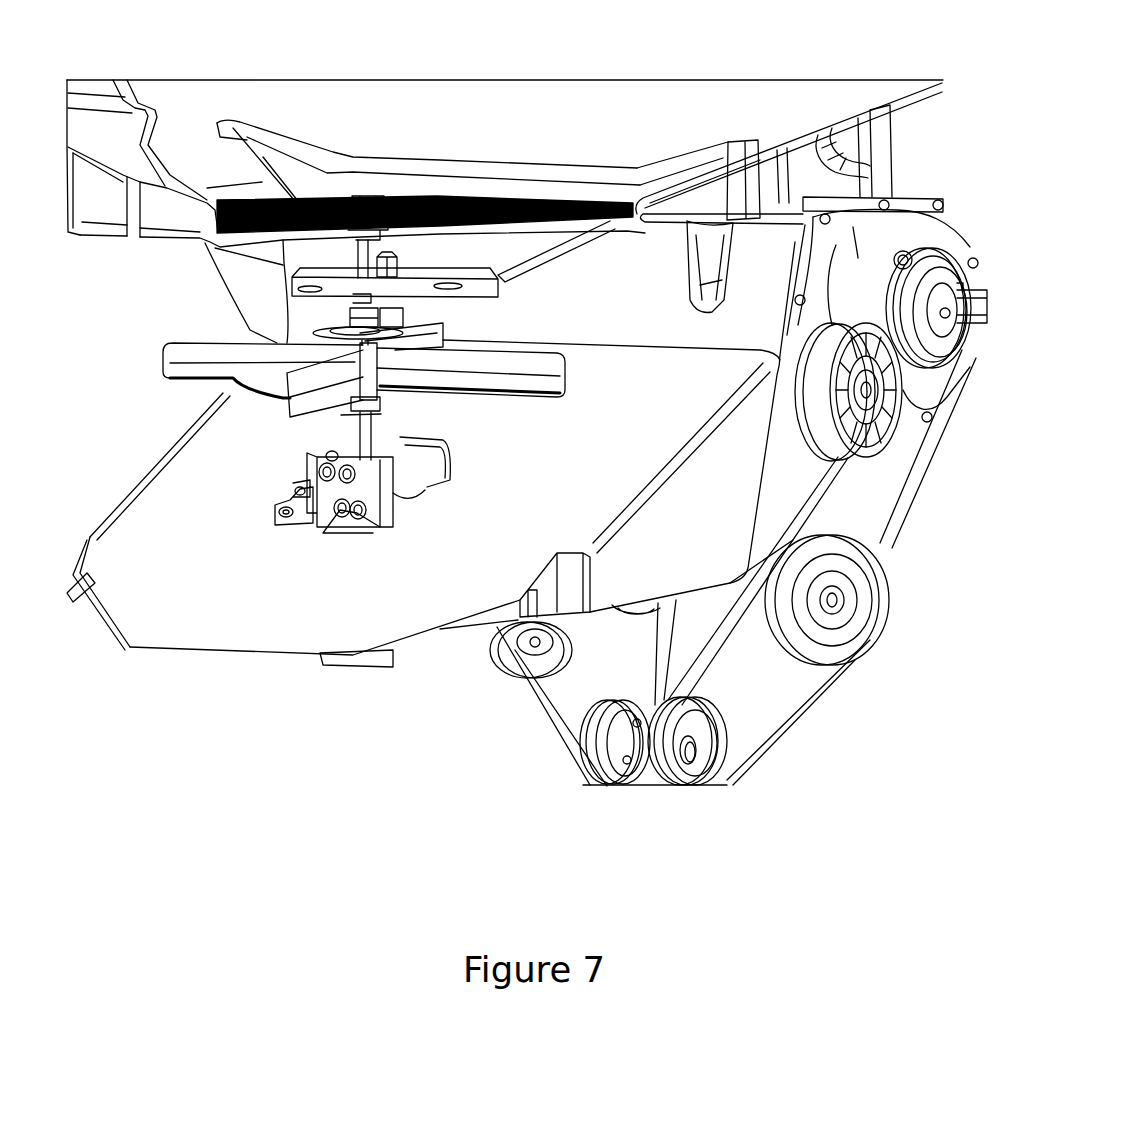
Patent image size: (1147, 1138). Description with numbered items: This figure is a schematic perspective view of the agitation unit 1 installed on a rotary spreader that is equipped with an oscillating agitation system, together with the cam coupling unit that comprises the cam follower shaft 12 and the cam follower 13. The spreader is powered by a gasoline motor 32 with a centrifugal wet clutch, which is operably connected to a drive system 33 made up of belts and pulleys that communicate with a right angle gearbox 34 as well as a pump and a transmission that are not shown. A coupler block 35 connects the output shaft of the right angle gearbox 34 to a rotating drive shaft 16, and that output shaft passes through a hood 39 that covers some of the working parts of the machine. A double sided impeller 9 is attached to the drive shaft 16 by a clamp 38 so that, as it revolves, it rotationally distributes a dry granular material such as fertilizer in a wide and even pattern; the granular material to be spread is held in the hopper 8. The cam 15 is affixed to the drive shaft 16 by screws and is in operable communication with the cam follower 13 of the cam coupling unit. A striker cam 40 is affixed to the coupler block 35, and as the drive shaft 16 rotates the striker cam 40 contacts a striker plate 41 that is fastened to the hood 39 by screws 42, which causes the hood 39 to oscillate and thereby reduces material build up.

The agitation unit 1 is at (432, 272).
The hopper 8 is at (151, 148).
The impeller 9 is at (187, 340).
The cam follower shaft 12 is at (400, 313).
The cam follower 13 is at (410, 323).
The cam 15 is at (323, 328).
The drive shaft 16 is at (380, 430).
The gasoline motor 32 is at (893, 178).
The drive system 33 is at (813, 710).
The right angle gearbox 34 is at (347, 667).
The coupler block 35 is at (383, 493).
The clamp 38 is at (387, 403).
The hood 39 is at (183, 653).
The striker cam 40 is at (333, 453).
The striker plate 41 is at (290, 527).
The screws 42 is at (293, 492).